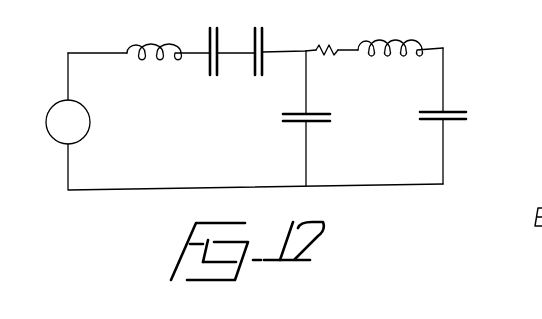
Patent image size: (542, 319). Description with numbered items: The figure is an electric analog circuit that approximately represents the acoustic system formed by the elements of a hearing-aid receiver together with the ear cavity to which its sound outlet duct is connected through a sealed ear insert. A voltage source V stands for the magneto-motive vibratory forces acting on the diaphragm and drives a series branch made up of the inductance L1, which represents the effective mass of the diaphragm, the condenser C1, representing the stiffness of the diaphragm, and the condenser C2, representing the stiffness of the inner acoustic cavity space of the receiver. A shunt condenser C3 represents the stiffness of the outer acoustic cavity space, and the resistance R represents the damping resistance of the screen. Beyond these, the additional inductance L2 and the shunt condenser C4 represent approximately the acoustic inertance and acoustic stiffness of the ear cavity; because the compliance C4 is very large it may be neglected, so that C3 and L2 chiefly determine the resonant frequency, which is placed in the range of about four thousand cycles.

The voltage V is at (58, 132).
The inductance L1 is at (154, 42).
The condenser C1 is at (218, 40).
The condenser C2 is at (263, 40).
The damping resistance R is at (327, 37).
The additional inductance L2 is at (400, 37).
The condenser C3 is at (321, 122).
The condenser C4 is at (456, 120).